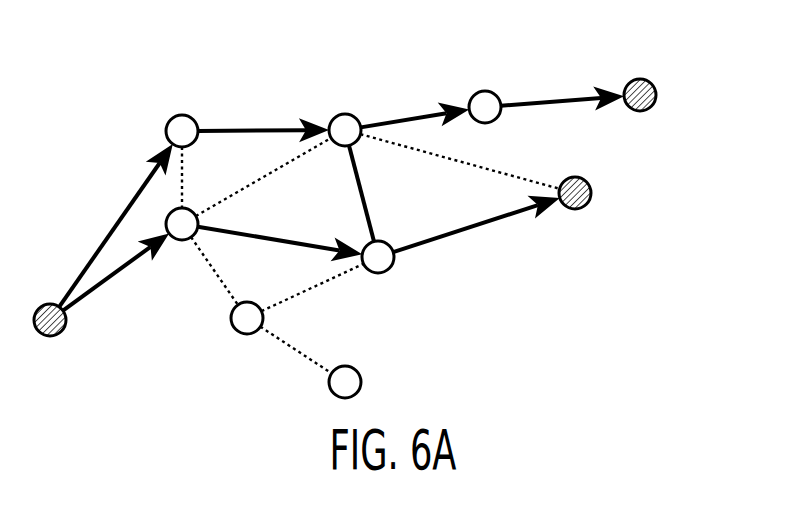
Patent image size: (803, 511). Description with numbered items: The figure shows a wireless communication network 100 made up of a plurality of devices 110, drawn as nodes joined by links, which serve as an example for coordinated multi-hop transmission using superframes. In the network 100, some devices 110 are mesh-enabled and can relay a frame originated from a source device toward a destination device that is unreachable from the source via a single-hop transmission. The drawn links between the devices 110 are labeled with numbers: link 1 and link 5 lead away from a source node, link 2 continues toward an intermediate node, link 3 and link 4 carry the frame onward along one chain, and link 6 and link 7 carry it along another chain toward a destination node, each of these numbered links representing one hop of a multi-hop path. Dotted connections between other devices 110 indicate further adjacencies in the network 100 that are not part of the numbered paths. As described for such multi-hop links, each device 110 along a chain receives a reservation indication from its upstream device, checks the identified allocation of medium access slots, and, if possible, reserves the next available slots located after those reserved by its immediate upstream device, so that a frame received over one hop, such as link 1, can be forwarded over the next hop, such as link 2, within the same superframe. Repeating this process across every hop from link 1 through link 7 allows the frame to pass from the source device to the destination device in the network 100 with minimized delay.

The link from node A to node F 1 is at (116, 225).
The link from node F to node E 2 is at (263, 117).
The link from node E to node I 3 is at (415, 107).
The link from node I to node H 4 is at (562, 91).
The link from node A to node B 5 is at (116, 271).
The link from node B to node C 6 is at (280, 235).
The link from node C to node D 7 is at (476, 230).
The wireless communication network 100 is at (689, 372).
The devices 110 is at (614, 208).